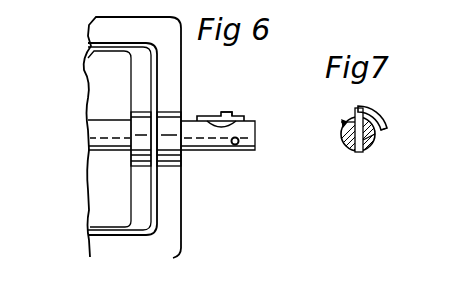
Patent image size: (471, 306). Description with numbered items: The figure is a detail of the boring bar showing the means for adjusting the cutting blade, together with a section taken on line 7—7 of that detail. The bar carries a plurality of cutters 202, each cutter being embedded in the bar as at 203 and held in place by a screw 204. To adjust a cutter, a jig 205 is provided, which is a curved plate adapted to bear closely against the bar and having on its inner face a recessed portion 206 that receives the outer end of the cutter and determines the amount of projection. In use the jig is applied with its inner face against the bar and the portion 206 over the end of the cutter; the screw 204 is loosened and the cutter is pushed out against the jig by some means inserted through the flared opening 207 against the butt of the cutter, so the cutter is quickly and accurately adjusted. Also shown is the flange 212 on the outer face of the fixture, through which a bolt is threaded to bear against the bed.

In FIG. 6, the flange 212 is at (93, 51).
In FIG. 6, the jig 205 is at (198, 116).
In FIG. 7, the jig 205 is at (388, 129).
In FIG. 6, the recessed portion 206 is at (234, 115).
In FIG. 6, the section line 7— 7 is at (235, 172).
In FIG. 7, the cutter 202 is at (353, 111).
In FIG. 7, the embedded seat 203 is at (373, 113).
In FIG. 7, the screw 204 is at (344, 146).
In FIG. 7, the flared opening 207 is at (367, 151).